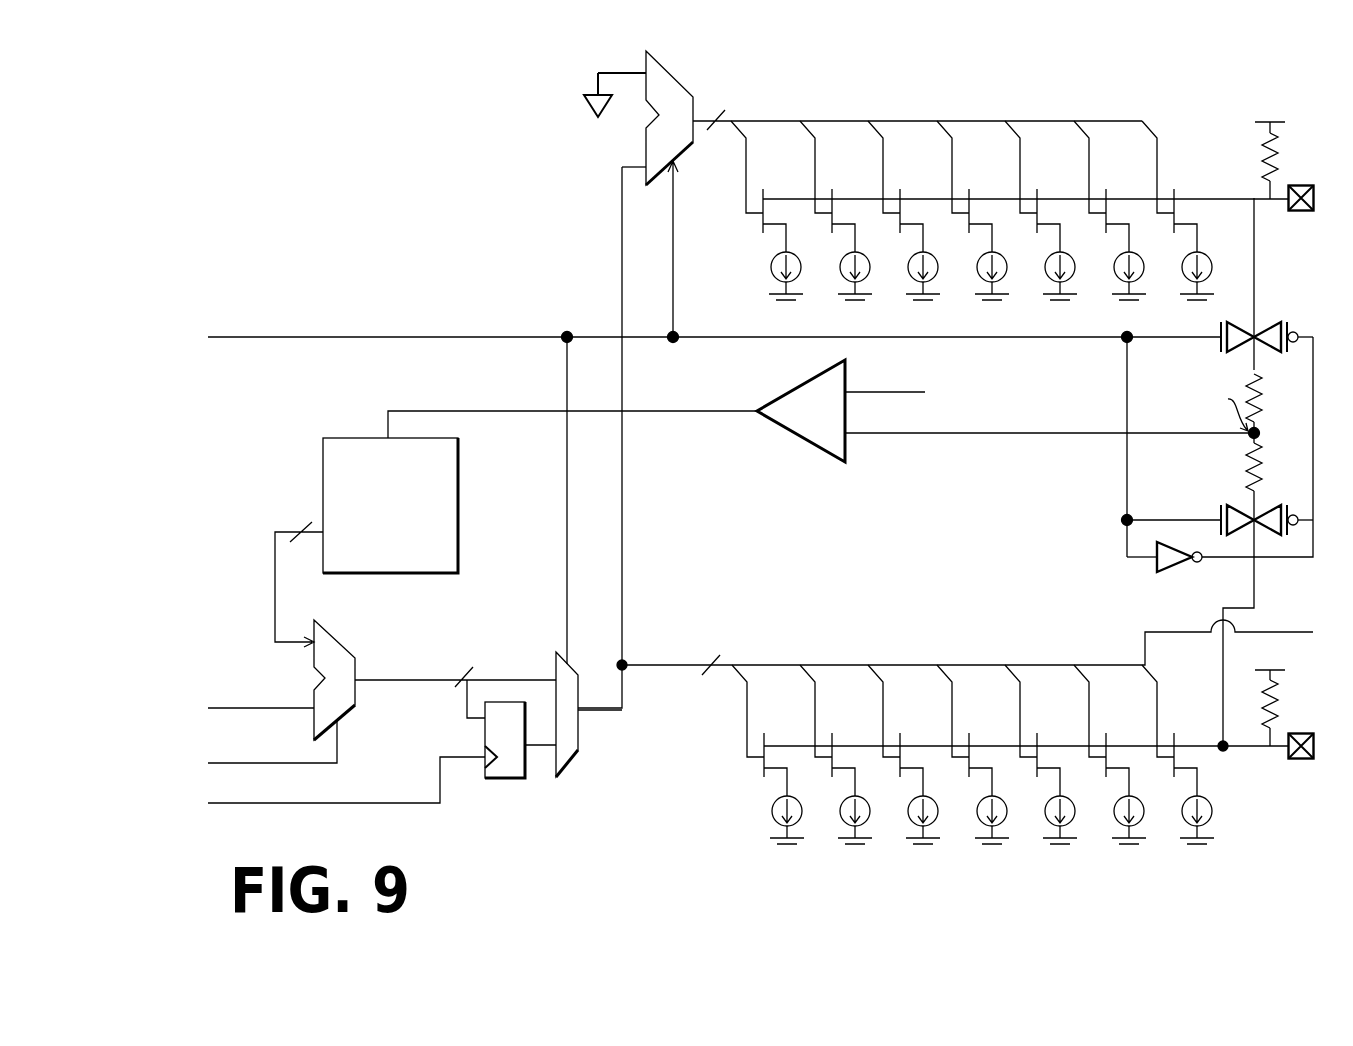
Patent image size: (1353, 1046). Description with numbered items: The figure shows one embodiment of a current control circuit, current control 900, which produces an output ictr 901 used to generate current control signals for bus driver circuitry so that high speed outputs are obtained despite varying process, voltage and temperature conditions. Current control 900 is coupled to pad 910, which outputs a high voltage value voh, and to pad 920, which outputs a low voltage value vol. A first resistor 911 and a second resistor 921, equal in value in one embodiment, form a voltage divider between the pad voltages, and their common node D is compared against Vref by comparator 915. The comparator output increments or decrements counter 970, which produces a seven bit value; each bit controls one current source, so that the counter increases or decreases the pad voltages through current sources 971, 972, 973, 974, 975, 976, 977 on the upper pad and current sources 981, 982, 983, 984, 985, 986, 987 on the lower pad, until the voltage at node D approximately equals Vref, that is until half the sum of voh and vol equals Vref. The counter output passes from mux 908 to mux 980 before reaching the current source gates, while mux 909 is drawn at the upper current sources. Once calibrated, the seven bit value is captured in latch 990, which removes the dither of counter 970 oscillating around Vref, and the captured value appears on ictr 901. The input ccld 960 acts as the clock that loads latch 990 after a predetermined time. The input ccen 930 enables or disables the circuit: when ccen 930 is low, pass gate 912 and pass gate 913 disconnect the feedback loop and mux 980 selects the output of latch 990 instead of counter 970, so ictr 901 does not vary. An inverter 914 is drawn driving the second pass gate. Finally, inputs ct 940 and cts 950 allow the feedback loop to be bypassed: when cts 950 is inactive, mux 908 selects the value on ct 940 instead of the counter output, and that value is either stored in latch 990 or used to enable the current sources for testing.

The current control 900 is at (272, 147).
The ictr output 901 is at (981, 642).
The mux 908 is at (337, 648).
The mux 909 is at (685, 95).
The pad 910 is at (1278, 165).
The resistor R911 911 is at (1278, 408).
The pass gate 912 is at (1263, 326).
The pass gate 913 is at (1260, 508).
The inverter 914 is at (1155, 568).
The comparator 915 is at (838, 450).
The pad 920 is at (1281, 710).
The resistor R921 921 is at (1229, 481).
The current control enable (ccen) 930 is at (698, 489).
The current test (ct) 940 is at (251, 698).
The current test select (cts) 950 is at (256, 742).
The current control load (ccld) 960 is at (325, 780).
The counter 970 is at (324, 460).
The current source 971 is at (767, 221).
The current source 972 is at (836, 221).
The current source 973 is at (904, 221).
The current source 974 is at (973, 221).
The current source 975 is at (1041, 221).
The current source 976 is at (1110, 221).
The current source 977 is at (1178, 221).
The mux 980 is at (582, 736).
The current source 981 is at (768, 769).
The current source 982 is at (836, 769).
The current source 983 is at (904, 769).
The current source 984 is at (973, 769).
The current source 985 is at (1041, 769).
The current source 986 is at (1110, 769).
The current source 987 is at (1178, 769).
The latch 990 is at (502, 770).